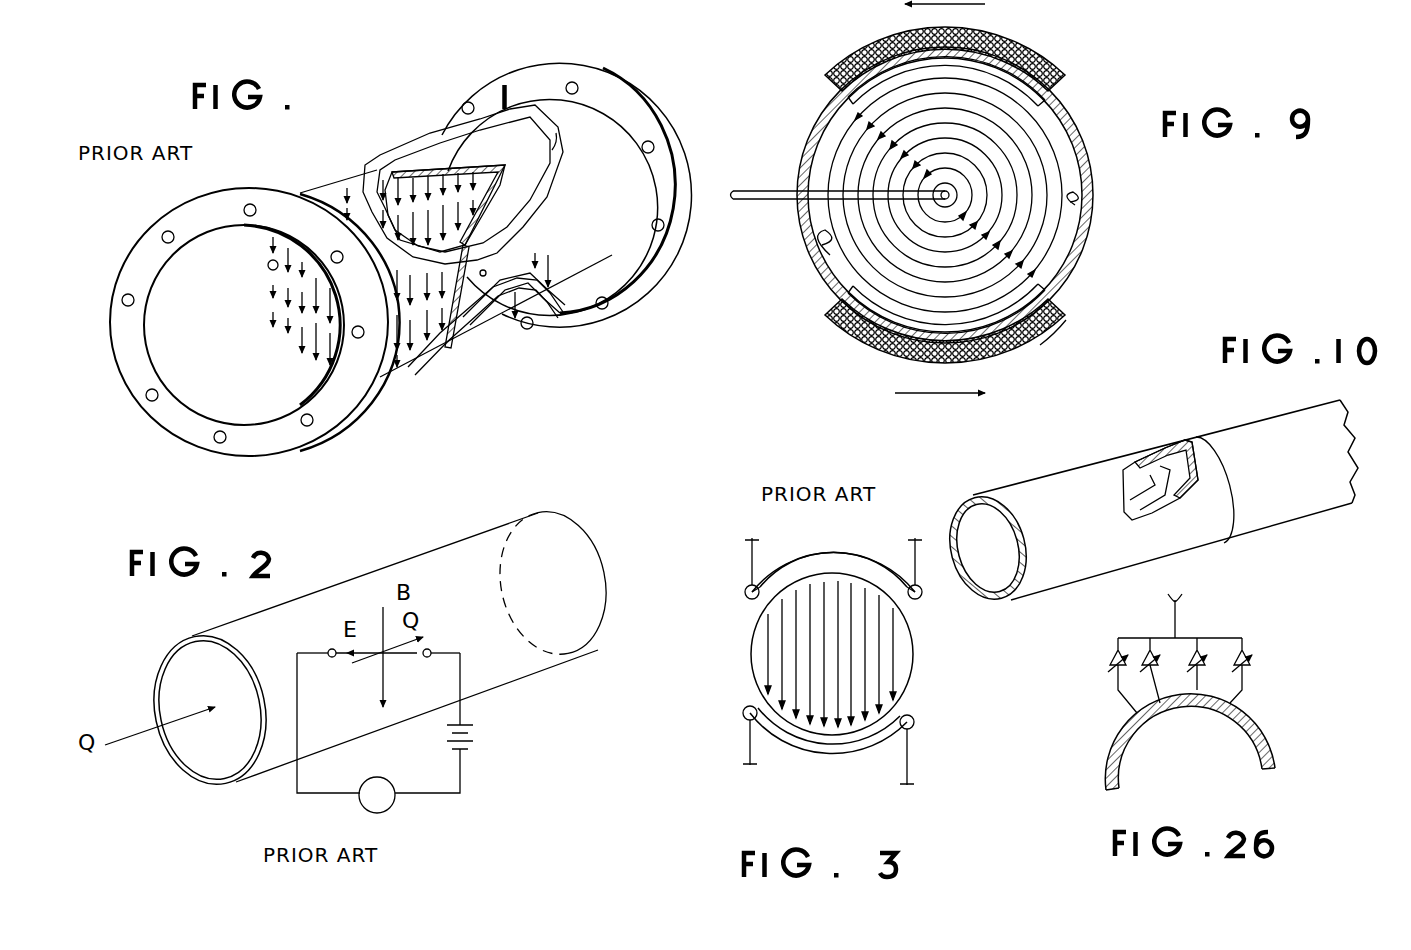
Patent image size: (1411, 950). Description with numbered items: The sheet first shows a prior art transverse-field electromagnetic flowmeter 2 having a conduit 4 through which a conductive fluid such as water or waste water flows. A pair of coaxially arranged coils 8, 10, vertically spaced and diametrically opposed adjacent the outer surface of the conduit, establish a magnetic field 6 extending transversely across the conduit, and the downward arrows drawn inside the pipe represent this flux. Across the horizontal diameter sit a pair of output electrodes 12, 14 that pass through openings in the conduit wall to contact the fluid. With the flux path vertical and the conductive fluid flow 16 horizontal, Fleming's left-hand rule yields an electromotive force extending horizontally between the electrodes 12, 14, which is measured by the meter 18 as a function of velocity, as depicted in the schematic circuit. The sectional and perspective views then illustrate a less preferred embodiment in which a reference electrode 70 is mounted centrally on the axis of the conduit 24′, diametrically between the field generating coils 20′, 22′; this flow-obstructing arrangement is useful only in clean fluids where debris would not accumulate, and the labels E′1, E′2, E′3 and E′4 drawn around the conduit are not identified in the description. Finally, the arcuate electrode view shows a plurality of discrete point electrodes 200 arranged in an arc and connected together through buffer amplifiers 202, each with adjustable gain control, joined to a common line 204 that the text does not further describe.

In FIG. 1, the electromagnetic flowmeter 2 is at (608, 62).
In FIG. 1, the conduit 4 is at (412, 158).
In FIG. 1, the magnetic field 6 is at (430, 180).
In FIG. 2, the magnetic field 6 is at (385, 610).
In FIG. 3, the magnetic field 6 is at (823, 640).
In FIG. 1, the coil 8 is at (566, 138).
In FIG. 3, the coil 8 is at (832, 548).
In FIG. 1, the coil 10 is at (487, 305).
In FIG. 3, the coil 10 is at (805, 752).
In FIG. 1, the output electrode 12 is at (268, 268).
In FIG. 2, the output electrode 12 is at (332, 649).
In FIG. 1, the output electrode 14 is at (487, 273).
In FIG. 2, the output electrode 14 is at (431, 650).
In FIG. 2, the conductive fluid flow 16 is at (133, 735).
In FIG. 2, the meter 18 is at (381, 777).
In FIG. 9, the reference electrode 70 is at (950, 190).
In FIG. 10, the reference electrode 70 is at (1182, 510).
In FIG. 9, the field generating coil 20′ is at (1078, 62).
In FIG. 9, the field generating coil 22′ is at (1068, 318).
In FIG. 10, the conduit 24′ is at (1123, 463).
In FIG. 9, the ball electrode E′1 is at (985, 65).
In FIG. 9, the ball electrode E′2 is at (880, 312).
In FIG. 9, the electrode E′3 is at (818, 238).
In FIG. 9, the electrode E′4 is at (1082, 200).
In FIG. 26, the discrete point electrode 200 is at (1127, 723).
In FIG. 26, the buffer amplifier 202 is at (1253, 661).
In FIG. 26, the bus line 204 is at (1223, 637).